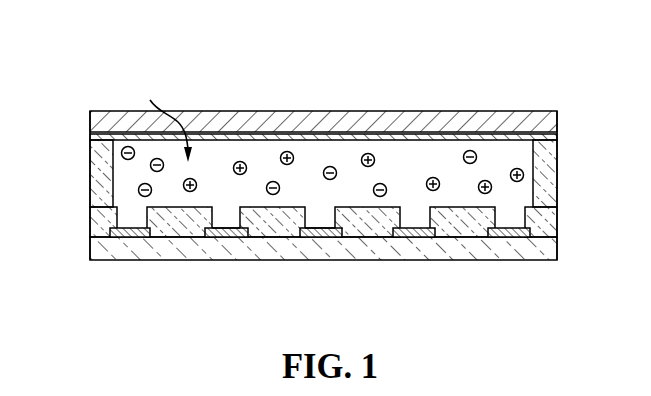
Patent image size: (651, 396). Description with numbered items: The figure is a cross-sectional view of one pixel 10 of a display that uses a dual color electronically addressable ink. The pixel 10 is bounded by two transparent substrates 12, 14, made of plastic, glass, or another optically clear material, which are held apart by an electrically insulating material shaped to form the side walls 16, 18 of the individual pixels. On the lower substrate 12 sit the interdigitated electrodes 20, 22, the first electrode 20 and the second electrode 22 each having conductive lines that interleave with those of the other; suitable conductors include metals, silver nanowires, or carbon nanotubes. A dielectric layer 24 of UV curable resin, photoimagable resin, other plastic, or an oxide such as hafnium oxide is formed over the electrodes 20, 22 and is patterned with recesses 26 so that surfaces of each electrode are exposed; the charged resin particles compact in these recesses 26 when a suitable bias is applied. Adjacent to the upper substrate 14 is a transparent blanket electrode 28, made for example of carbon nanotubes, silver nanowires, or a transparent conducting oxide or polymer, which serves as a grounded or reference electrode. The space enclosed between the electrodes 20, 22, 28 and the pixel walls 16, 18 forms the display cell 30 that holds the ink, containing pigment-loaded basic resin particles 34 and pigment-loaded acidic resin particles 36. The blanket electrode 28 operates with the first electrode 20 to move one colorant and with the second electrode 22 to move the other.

The pixel 10 is at (330, 173).
The transparent substrate 12 is at (542, 247).
The transparent substrate 14 is at (533, 120).
The side wall 16 is at (100, 193).
The side wall 18 is at (552, 168).
The first electrode 20 is at (128, 233).
The second electrode 22 is at (223, 233).
The dielectric layer 24 is at (543, 218).
The recess 26 is at (215, 215).
The blanket electrode 28 is at (557, 136).
The display cell 30 is at (166, 117).
The pigment-loaded basic resin particles 34 is at (287, 151).
The pigment-loaded acidic resin particles 36 is at (150, 165).